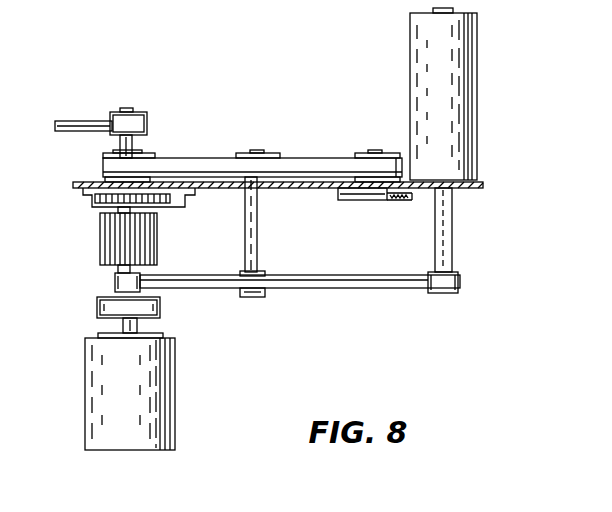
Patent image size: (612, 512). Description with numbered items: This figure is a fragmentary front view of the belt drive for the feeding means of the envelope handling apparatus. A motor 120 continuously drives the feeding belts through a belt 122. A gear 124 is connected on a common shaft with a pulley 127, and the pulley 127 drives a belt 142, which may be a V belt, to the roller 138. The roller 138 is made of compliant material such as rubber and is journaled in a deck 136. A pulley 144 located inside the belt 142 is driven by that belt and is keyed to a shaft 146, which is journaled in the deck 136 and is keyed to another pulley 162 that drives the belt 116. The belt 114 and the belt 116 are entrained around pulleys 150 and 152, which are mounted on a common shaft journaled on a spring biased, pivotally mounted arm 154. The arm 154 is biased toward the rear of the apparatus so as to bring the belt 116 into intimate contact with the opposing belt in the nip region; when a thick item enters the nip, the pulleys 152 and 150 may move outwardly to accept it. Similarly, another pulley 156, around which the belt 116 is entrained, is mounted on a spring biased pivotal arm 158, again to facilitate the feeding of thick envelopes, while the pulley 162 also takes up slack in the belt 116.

The belt 114 is at (75, 120).
The belt 116 is at (303, 158).
The motor 120 is at (175, 390).
The belt 122 is at (98, 316).
The gear 124 is at (150, 247).
The pulley 127 is at (113, 272).
The deck 136 is at (465, 188).
The roller 138 is at (473, 82).
The belt 142 is at (353, 288).
The pulley 144 is at (264, 272).
The shaft 146 is at (257, 212).
The pulley 150 is at (140, 112).
The pulley 152 is at (102, 157).
The spring biased pivotally mounted arm 154 is at (157, 203).
The pulley 156 is at (363, 153).
The spring biased pivotal arm 158 is at (367, 200).
The pulley 162 is at (235, 153).